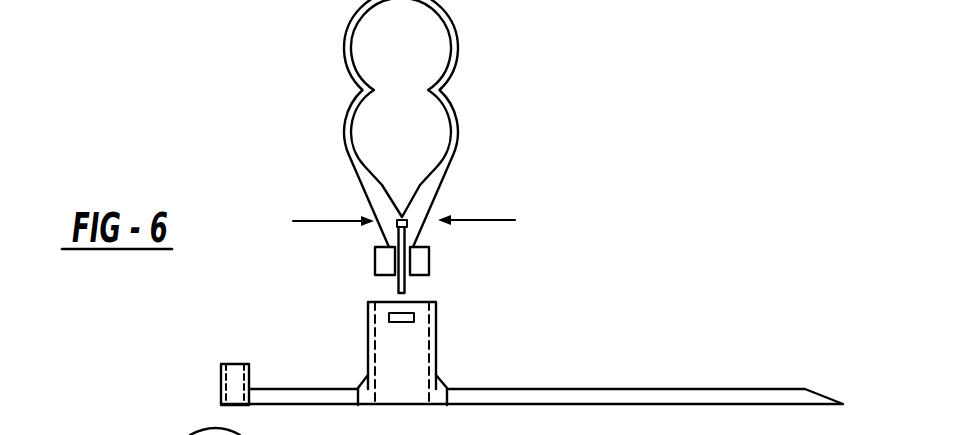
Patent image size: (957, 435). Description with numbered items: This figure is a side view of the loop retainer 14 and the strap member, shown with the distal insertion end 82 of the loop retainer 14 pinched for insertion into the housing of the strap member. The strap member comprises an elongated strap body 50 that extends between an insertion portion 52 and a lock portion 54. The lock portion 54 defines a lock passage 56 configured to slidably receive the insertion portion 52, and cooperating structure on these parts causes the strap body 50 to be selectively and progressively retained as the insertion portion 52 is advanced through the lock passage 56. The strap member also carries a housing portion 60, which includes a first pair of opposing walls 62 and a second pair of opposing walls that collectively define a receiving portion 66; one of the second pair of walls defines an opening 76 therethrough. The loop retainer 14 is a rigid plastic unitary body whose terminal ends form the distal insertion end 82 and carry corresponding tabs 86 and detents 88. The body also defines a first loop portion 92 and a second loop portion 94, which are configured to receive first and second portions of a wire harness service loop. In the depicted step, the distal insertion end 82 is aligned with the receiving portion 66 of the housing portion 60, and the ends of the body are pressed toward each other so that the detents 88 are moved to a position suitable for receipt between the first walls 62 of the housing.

The loop retainer 14 is at (454, 68).
The elongated strap body 50 is at (598, 396).
The insertion portion 52 is at (815, 389).
The lock portion 54 is at (235, 370).
The lock passage 56 is at (46, 1).
The housing portion 60 is at (402, 370).
The first pair of opposing walls 62 is at (368, 312).
The receiving portion 66 is at (437, 315).
The opening 76 is at (402, 323).
The distal insertion end 82 is at (306, 251).
The tabs 86 is at (398, 285).
The detents 88 is at (384, 258).
The first loop portion 92 is at (414, 37).
The second loop portion 94 is at (412, 135).